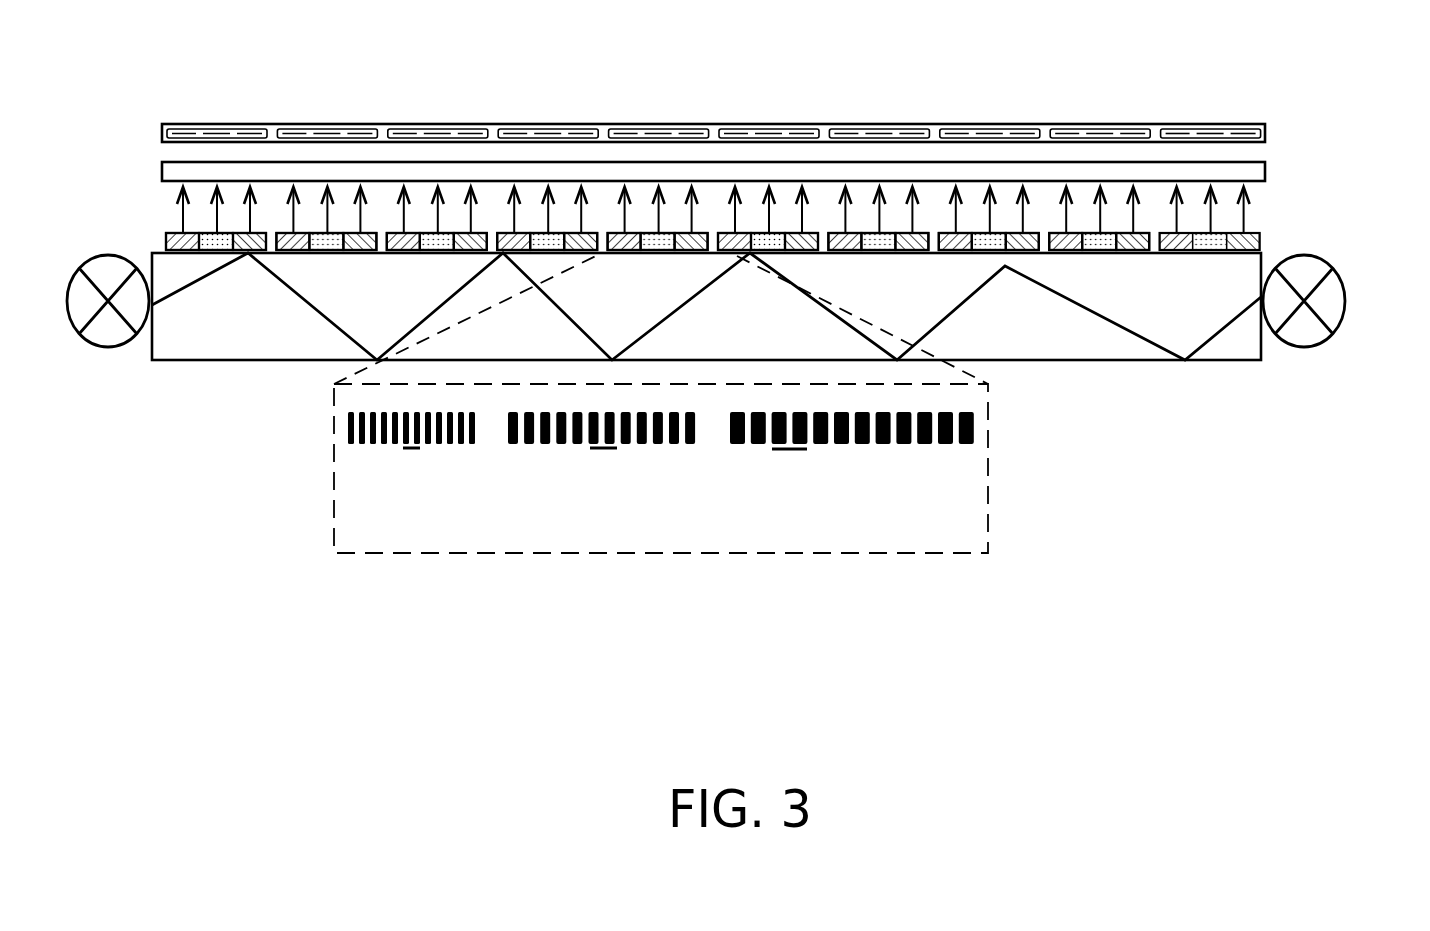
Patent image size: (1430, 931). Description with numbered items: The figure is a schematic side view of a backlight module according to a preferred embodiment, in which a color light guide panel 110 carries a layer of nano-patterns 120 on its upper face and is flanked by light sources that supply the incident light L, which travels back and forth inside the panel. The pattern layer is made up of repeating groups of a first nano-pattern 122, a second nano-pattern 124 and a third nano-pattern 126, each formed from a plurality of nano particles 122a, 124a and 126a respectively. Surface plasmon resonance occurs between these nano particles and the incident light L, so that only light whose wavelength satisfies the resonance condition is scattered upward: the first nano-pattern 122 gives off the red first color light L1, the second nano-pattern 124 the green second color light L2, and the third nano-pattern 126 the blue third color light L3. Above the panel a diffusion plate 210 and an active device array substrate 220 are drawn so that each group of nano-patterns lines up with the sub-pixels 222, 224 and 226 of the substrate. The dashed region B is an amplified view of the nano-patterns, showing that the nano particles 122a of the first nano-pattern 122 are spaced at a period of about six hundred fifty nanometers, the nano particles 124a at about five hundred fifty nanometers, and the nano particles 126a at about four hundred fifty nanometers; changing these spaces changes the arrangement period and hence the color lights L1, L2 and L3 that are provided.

The light guide plate 110 is at (1044, 347).
The grating structure layer 120 is at (786, 336).
The first nano-pattern 122 is at (1240, 250).
The second nano-pattern 124 is at (1205, 250).
The third nano-pattern 126 is at (1179, 250).
The nano particles 122a is at (965, 444).
The nano particles 124a is at (692, 444).
The nano particles 126a is at (472, 443).
The diffusion plate 210 is at (1300, 167).
The active device array substrate 220 is at (792, 74).
The sub-pixel 222 is at (1253, 133).
The sub-pixel 224 is at (1210, 133).
The sub-pixel 226 is at (1173, 133).
The incident light L is at (202, 280).
The first color light L1 is at (250, 213).
The second color light L2 is at (217, 213).
The third color light L3 is at (183, 213).
The region B is at (838, 560).